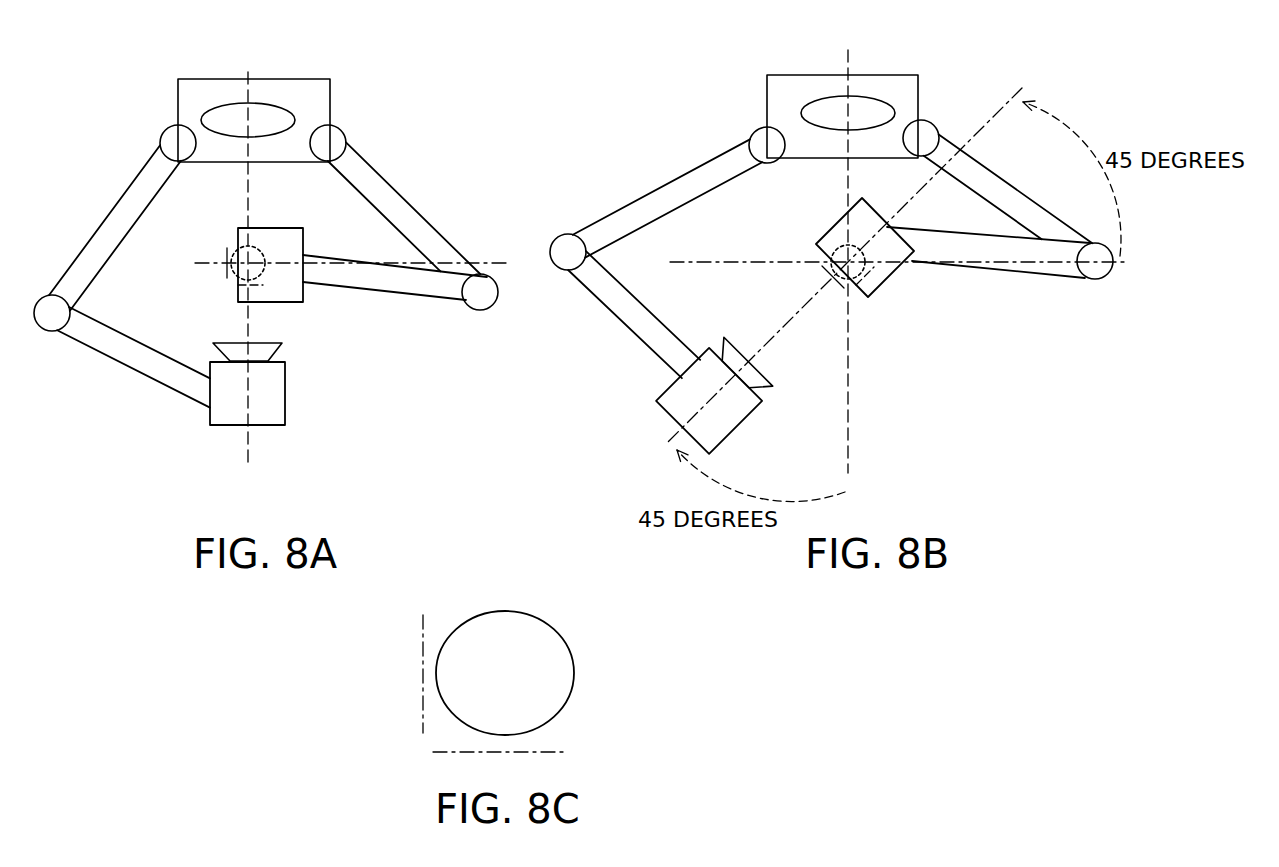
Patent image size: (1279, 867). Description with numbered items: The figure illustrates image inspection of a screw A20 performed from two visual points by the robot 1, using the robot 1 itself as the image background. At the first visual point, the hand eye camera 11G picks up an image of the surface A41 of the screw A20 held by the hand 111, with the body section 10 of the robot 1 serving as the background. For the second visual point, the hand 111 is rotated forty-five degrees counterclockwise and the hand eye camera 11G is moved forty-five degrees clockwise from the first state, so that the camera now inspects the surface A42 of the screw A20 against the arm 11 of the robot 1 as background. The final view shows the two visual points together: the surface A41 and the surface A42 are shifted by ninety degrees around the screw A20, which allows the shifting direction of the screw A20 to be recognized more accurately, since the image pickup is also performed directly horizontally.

In FIG. 8A, the robot 1 is at (309, 68).
In FIG. 8B, the robot 1 is at (887, 60).
In FIG. 8A, the body section 10 is at (266, 278).
In FIG. 8B, the body section 10 is at (831, 266).
In FIG. 8A, the arm 11 is at (95, 205).
In FIG. 8B, the arm 11 is at (650, 163).
In FIG. 8A, the hand 111 is at (305, 290).
In FIG. 8B, the hand 111 is at (900, 280).
In FIG. 8A, the hand eye camera 11G is at (258, 352).
In FIG. 8B, the hand eye camera 11G is at (760, 372).
In FIG. 8A, the screw A20 is at (257, 247).
In FIG. 8B, the screw A20 is at (832, 256).
In FIG. 8C, the screw A20 is at (520, 628).
In FIG. 8A, the surface A41 is at (235, 290).
In FIG. 8B, the surface A41 is at (862, 305).
In FIG. 8C, the surface A41 is at (556, 752).
In FIG. 8A, the surface A42 is at (226, 266).
In FIG. 8B, the surface A42 is at (822, 268).
In FIG. 8C, the surface A42 is at (422, 688).